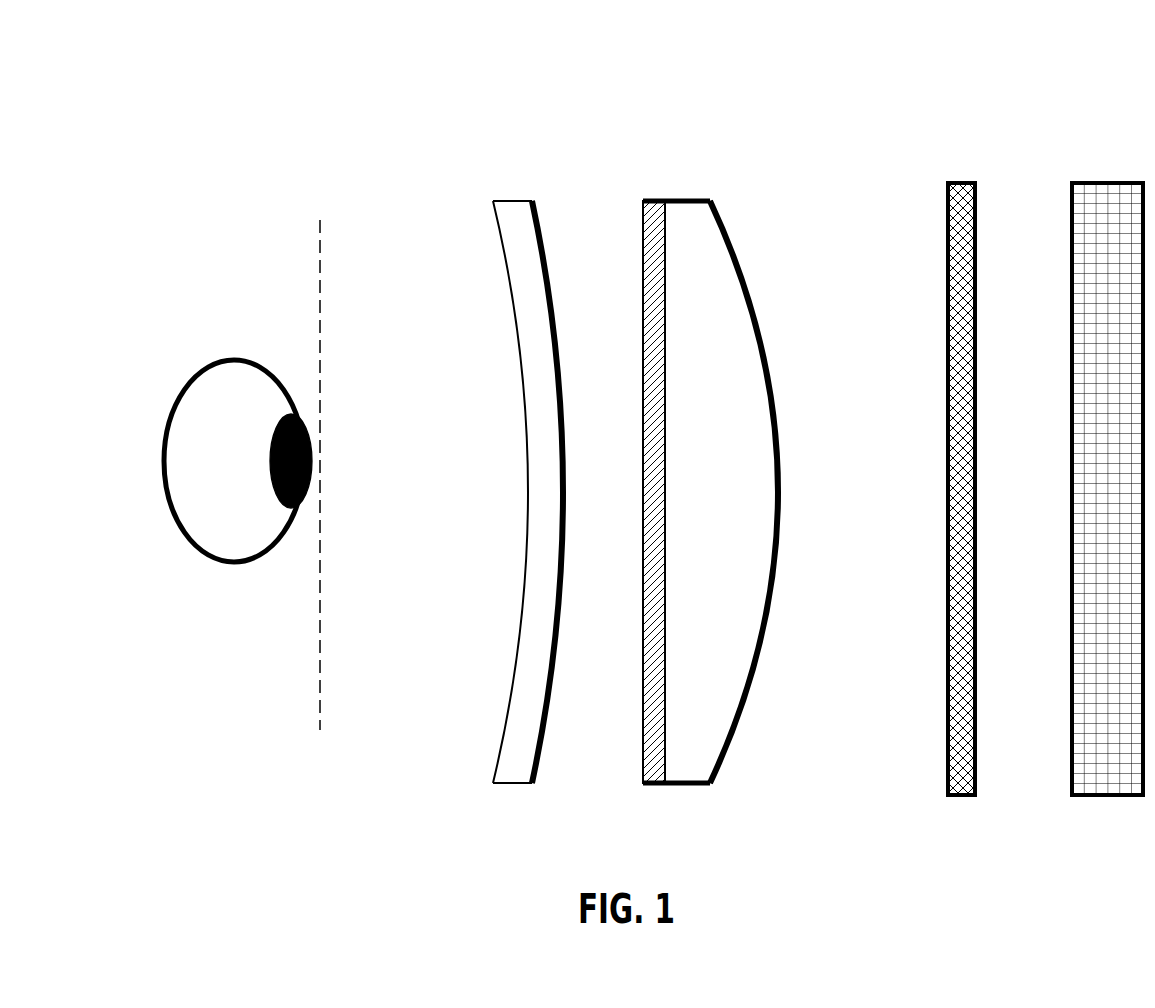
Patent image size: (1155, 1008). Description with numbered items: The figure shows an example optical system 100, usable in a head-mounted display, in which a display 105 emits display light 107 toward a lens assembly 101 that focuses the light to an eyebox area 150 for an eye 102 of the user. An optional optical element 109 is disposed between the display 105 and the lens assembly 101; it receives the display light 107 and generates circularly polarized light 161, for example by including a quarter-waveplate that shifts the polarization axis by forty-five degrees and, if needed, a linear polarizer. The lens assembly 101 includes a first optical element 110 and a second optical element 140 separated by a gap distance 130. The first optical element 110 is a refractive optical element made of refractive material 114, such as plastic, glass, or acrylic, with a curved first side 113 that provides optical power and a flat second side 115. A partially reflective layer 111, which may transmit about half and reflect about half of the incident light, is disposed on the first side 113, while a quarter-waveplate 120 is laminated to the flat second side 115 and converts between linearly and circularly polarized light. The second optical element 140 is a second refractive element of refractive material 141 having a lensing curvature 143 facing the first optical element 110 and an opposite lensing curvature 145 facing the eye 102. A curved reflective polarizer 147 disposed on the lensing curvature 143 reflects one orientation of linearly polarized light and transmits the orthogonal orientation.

The optical system 100 is at (1048, 31).
The lens assembly 101 is at (895, 65).
The eye 102 is at (208, 343).
The display 105 is at (1122, 183).
The display light 107 is at (992, 273).
The optional optical element 109 is at (963, 796).
The first optical element 110 is at (820, 142).
The partially reflective layer 111 is at (760, 283).
The first side 113 is at (728, 306).
The refractive material 114 is at (737, 498).
The second side 115 is at (683, 404).
The quarter-waveplate 120 is at (654, 185).
The gap distance 130 is at (638, 792).
The second optical element 140 is at (572, 142).
The refractive material 141 is at (523, 221).
The lensing curvature 143 is at (523, 261).
The lensing curvature 145 is at (500, 319).
The curved reflective polarizer 147 is at (523, 801).
The eyebox area 150 is at (320, 220).
The circularly polarized light 161 is at (948, 273).